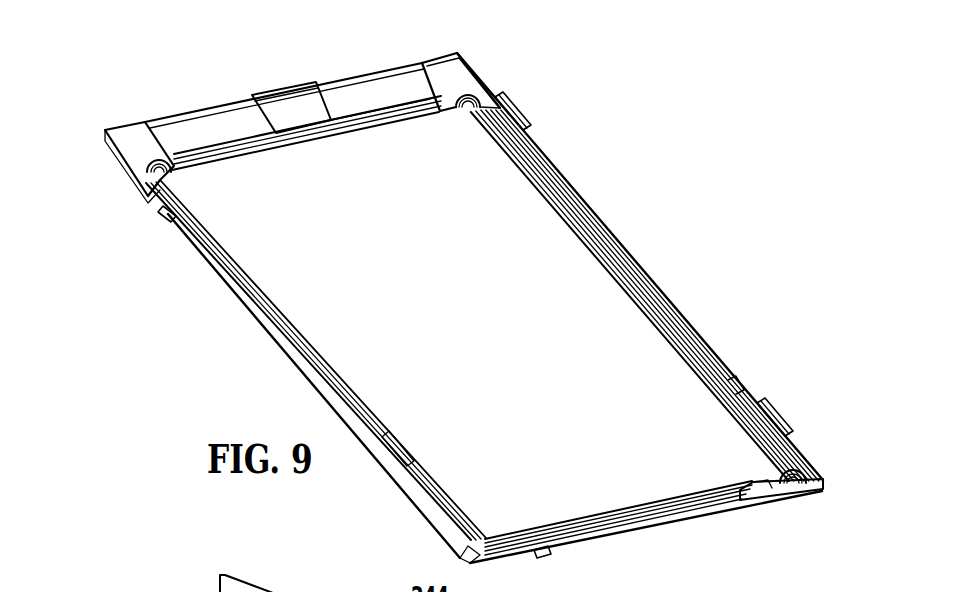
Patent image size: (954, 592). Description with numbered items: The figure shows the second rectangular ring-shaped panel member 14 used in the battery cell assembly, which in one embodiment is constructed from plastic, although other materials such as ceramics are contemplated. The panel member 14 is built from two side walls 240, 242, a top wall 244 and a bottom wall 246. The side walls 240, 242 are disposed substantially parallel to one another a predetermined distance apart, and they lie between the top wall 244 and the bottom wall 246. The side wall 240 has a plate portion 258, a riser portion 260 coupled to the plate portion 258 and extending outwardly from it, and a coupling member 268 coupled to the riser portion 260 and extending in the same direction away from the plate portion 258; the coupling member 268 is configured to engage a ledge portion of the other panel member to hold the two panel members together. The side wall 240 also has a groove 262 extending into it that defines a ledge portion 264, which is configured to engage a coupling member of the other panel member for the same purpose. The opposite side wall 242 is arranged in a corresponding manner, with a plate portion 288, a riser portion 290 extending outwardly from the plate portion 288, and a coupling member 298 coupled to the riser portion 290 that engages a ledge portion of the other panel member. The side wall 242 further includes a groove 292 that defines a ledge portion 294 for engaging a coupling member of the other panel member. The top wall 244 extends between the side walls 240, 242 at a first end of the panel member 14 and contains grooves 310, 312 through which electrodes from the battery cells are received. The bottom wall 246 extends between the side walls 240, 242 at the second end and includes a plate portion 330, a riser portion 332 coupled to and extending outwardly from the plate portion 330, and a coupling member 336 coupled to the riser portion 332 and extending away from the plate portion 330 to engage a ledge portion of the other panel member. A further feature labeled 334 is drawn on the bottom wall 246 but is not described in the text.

The panel member 14 is at (625, 193).
The side wall 240 is at (284, 343).
The side wall 242 is at (655, 273).
The top wall 244 is at (346, 84).
The bottom wall 246 is at (713, 515).
The plate portion 258 is at (271, 300).
The riser portion 260 is at (239, 292).
The groove 262 is at (143, 200).
The ledge portion 264 is at (167, 212).
The coupling member 268 is at (420, 462).
The plate portion 288 is at (600, 266).
The riser portion 290 is at (617, 240).
The groove 292 is at (755, 403).
The ledge portion 294 is at (738, 390).
The coupling member 298 is at (523, 107).
The groove 310 is at (188, 116).
The groove 312 is at (394, 72).
The plate portion 330 is at (597, 513).
The riser portion 332 is at (602, 535).
The front tab 334 is at (541, 548).
The coupling member 336 is at (773, 486).